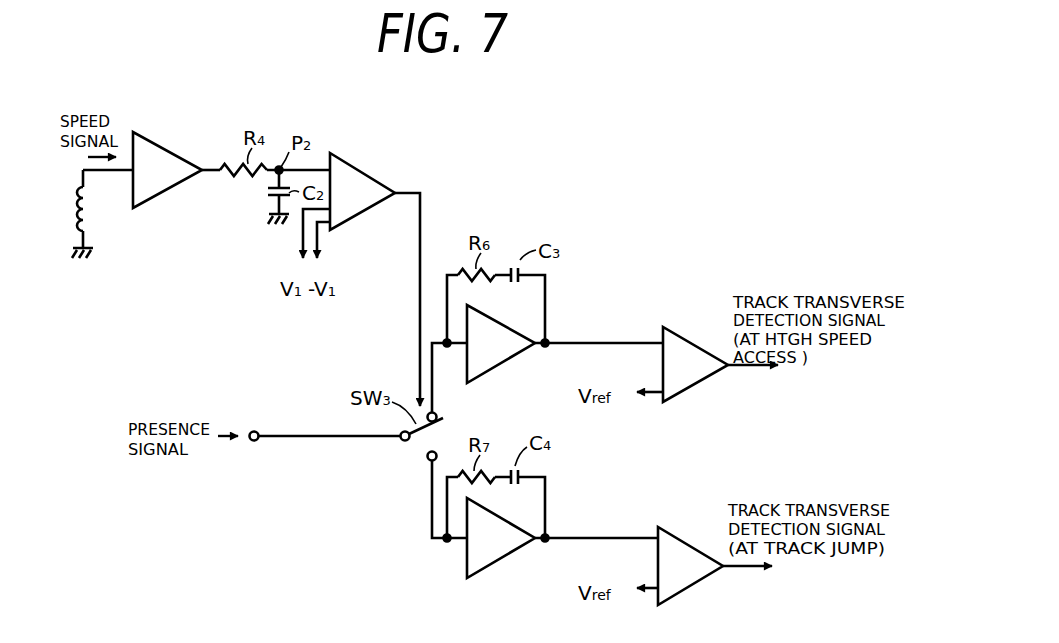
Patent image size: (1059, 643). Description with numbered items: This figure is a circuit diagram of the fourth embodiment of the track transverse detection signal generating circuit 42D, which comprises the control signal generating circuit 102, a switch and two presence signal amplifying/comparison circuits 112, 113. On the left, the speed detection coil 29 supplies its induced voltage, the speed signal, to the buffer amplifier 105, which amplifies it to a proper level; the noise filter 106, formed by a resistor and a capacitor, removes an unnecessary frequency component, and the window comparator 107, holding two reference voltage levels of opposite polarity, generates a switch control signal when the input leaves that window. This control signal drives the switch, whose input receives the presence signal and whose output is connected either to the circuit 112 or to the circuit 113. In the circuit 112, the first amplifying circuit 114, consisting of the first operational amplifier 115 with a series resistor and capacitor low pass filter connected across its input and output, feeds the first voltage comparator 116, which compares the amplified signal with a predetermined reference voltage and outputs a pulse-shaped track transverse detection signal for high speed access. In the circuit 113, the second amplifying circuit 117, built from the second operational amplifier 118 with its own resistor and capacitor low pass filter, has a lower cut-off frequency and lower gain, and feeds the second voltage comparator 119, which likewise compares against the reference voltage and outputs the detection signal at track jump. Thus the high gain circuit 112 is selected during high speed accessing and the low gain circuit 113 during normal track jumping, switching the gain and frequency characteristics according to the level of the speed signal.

The speed detection coil 29 is at (78, 220).
The control signal generating circuit 102 is at (184, 246).
The buffer amplifier 105 is at (177, 152).
The noise filter 106 is at (250, 202).
The window comparator 107 is at (372, 170).
The presence signal amplifying/comparison circuit 112 is at (608, 236).
The presence signal amplifying/comparison circuit 113 is at (599, 484).
The first amplifying circuit 114 is at (517, 225).
The first operational amplifier 115 is at (500, 358).
The first voltage comparator 116 is at (705, 380).
The second amplifying circuit 117 is at (490, 583).
The second operational amplifier 118 is at (498, 558).
The second voltage comparator 119 is at (695, 584).
The track transverse detection signal generating circuit 42D is at (692, 318).